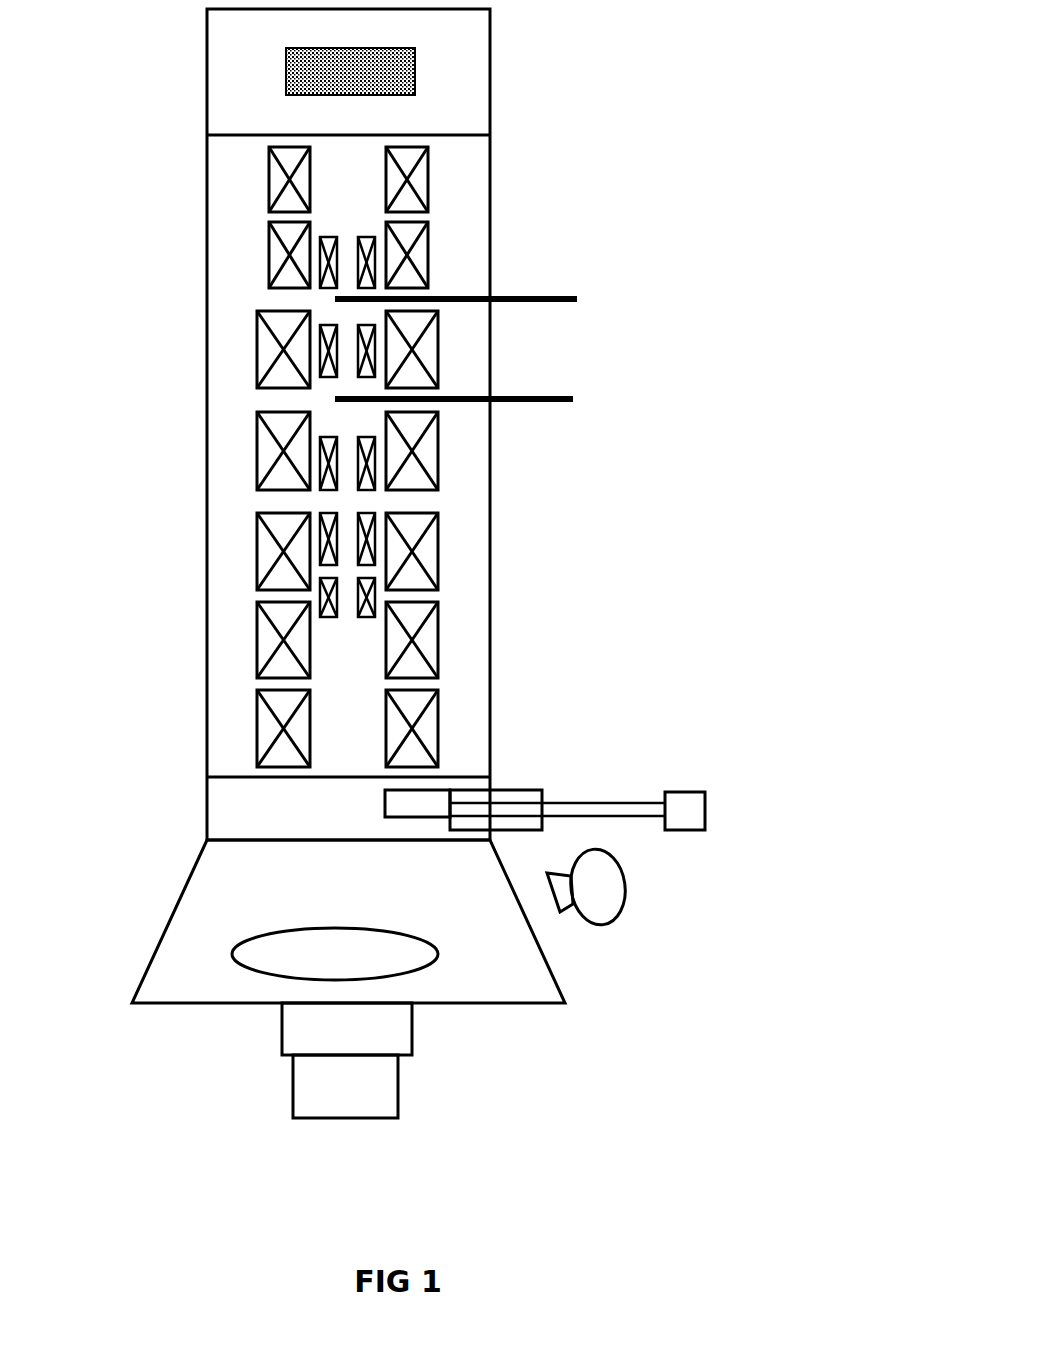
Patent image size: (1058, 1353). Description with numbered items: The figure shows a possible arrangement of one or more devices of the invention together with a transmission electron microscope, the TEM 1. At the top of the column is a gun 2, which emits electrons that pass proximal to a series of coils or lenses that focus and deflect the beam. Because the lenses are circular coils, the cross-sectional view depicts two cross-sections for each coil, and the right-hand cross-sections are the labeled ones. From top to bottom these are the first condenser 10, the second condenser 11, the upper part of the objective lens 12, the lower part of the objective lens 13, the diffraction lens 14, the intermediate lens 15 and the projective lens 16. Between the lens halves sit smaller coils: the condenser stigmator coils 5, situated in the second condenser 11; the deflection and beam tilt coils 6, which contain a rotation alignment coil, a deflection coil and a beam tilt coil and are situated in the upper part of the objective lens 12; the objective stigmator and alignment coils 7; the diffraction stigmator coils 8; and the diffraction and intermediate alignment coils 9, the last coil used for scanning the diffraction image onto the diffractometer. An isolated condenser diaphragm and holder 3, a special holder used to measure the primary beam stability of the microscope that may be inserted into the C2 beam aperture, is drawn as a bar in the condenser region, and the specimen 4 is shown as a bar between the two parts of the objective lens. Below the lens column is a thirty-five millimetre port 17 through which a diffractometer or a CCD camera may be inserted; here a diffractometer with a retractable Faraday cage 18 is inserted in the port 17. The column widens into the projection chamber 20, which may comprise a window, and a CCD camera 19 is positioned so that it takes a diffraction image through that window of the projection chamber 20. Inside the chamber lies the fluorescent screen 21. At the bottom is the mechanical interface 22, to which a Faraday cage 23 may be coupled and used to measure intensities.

The TEM 1 is at (737, 162).
The gun 2 is at (427, 62).
The isolated condenser diaphragm and holder 3 is at (566, 293).
The specimen 4 is at (565, 404).
The condenser stigmator coils 5 is at (356, 232).
The deflection and beam tilt coils 6 is at (356, 319).
The objective stigmator and alignment coils 7 is at (356, 431).
The diffraction stigmator coils 8 is at (356, 511).
The diffraction and intermediate alignment coils 9 is at (356, 573).
The first condenser 10 is at (432, 183).
The second condenser 11 is at (432, 252).
The upper part of the objective lens 12 is at (443, 353).
The lower part of the objective lens 13 is at (443, 457).
The diffraction lens 14 is at (443, 562).
The intermediate lens 15 is at (443, 650).
The projective lens 16 is at (443, 717).
The 35 mm port 17 is at (546, 787).
The retractable Faraday cage 18 is at (713, 786).
The CCD camera 19 is at (633, 885).
The projection chamber 20 is at (524, 941).
The fluorescent screen 21 is at (231, 953).
The mechanical interface 22 is at (415, 1030).
The Faraday cage 23 is at (353, 1120).